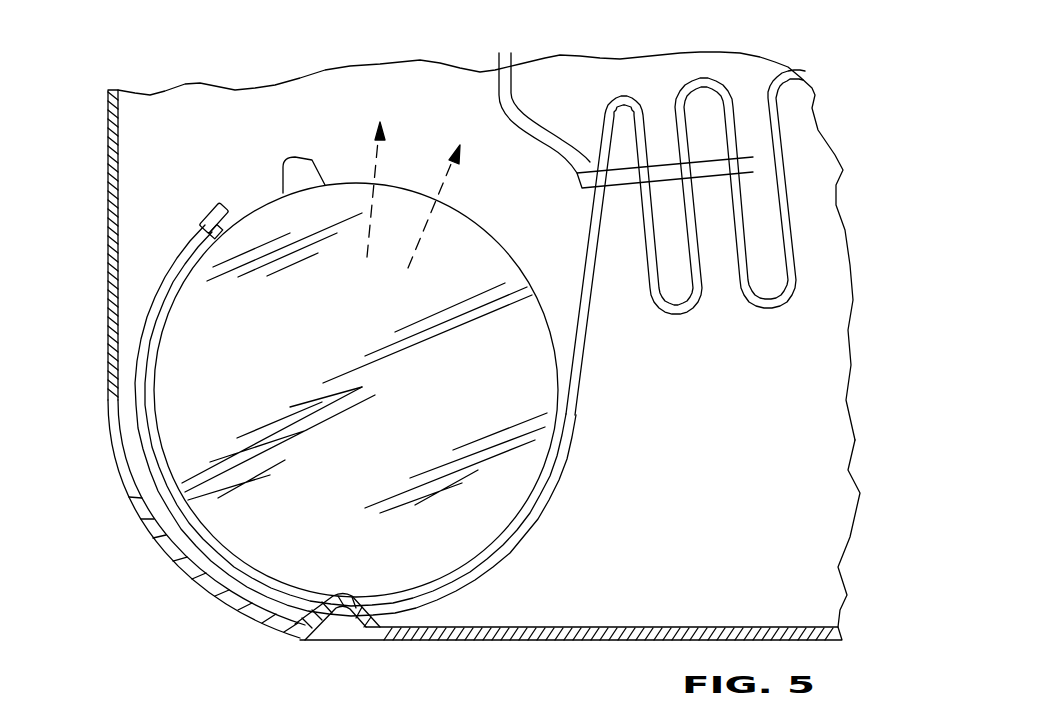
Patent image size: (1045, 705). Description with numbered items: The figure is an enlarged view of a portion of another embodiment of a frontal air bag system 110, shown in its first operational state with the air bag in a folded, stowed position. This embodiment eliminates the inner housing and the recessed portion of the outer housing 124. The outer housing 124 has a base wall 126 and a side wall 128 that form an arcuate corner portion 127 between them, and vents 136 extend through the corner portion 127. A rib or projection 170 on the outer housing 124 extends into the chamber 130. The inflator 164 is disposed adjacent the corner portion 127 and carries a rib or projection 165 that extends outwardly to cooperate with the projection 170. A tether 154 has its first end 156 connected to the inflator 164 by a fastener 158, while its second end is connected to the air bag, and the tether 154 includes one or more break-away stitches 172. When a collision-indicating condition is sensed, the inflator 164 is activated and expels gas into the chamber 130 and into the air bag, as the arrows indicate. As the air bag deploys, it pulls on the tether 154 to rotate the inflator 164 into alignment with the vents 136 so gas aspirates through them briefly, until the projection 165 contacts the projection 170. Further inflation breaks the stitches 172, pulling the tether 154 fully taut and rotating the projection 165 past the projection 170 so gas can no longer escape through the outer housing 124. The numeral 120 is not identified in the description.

The frontal air bag system 110 is at (830, 104).
The side wall 120 is at (108, 316).
The outer housing 124 is at (497, 640).
The base wall 126 is at (603, 640).
The arcuate corner portion 127 is at (178, 560).
The side wall 128 is at (108, 162).
The chamber 130 is at (832, 603).
The vents 136 is at (143, 508).
The tether 154 is at (580, 368).
The first end 156 is at (197, 235).
The fastener 158 is at (219, 214).
The inflator 164 is at (528, 453).
The projection 165 is at (305, 164).
The projection 170 is at (348, 606).
The break-away stitches 172 is at (620, 107).